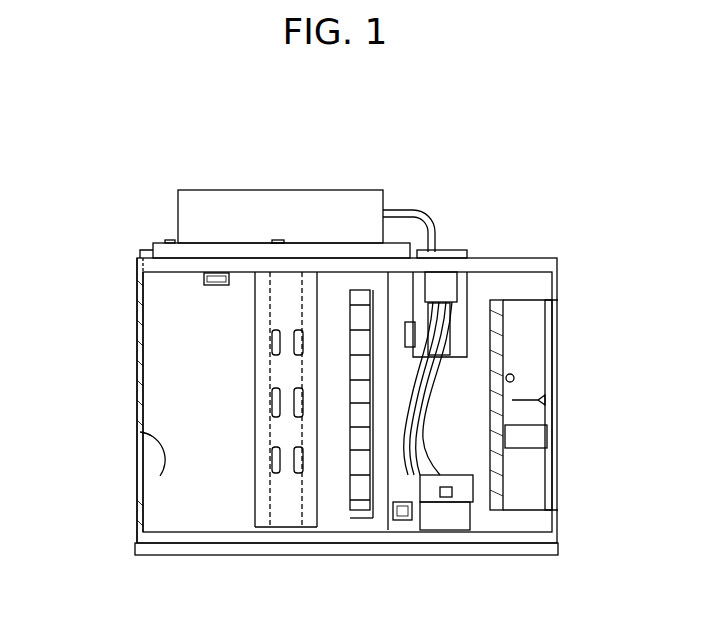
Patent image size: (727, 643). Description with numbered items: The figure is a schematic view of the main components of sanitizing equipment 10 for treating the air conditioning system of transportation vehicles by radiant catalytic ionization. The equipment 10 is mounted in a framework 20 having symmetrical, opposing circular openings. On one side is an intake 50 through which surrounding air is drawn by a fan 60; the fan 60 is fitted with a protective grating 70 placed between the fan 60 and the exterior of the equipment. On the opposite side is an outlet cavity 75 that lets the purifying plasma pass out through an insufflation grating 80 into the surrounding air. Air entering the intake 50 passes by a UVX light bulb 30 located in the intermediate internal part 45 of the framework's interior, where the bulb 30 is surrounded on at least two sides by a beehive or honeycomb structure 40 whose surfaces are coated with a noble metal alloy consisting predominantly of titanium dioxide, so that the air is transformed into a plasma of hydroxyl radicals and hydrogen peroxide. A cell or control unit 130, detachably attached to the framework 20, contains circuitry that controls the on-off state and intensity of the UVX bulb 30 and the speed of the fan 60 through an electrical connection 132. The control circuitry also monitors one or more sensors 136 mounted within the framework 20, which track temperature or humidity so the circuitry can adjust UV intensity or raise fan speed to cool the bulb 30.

The sanitizing equipment 10 is at (121, 206).
The framework 20 is at (495, 258).
The UVX light bulb 30 is at (280, 487).
The honeycomb structure 40 is at (317, 490).
The intermediate internal part 45 is at (332, 495).
The intake 50 is at (580, 445).
The fan 60 is at (540, 352).
The protective grating 70 is at (558, 430).
The outlet cavity 75 is at (160, 476).
The insufflation grating 80 is at (137, 390).
The control unit 130 is at (302, 203).
The electrical connection 132 is at (417, 215).
The sensors 136 is at (215, 273).